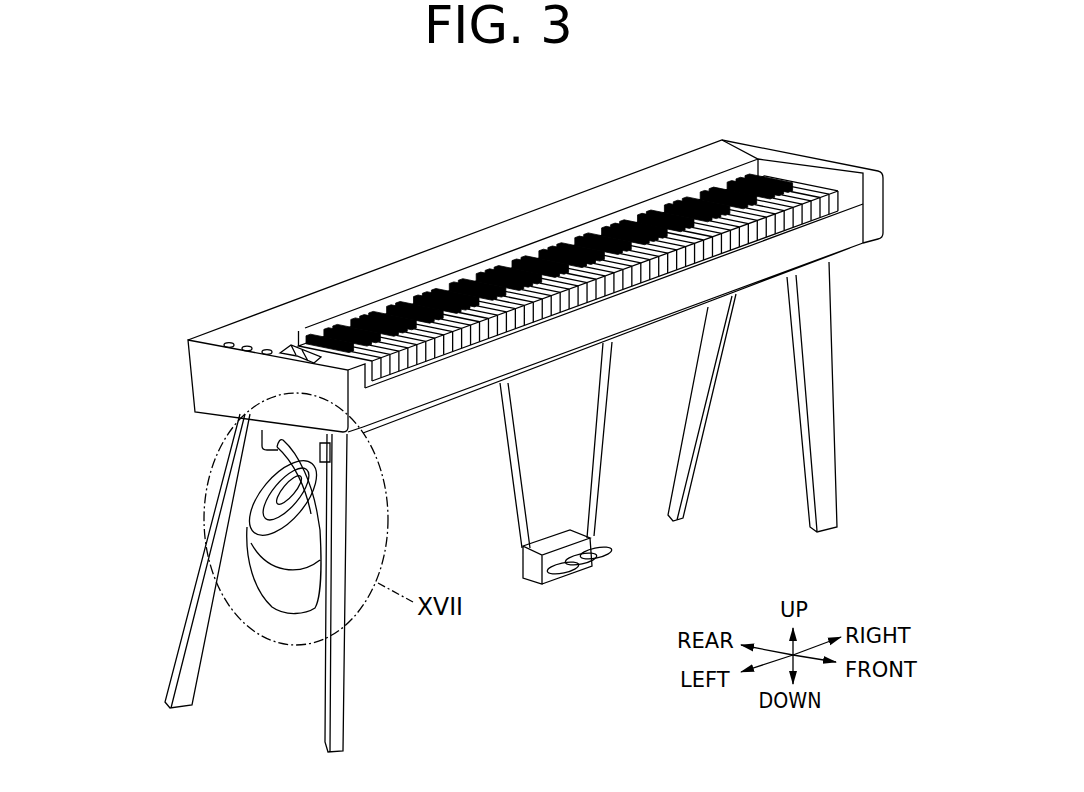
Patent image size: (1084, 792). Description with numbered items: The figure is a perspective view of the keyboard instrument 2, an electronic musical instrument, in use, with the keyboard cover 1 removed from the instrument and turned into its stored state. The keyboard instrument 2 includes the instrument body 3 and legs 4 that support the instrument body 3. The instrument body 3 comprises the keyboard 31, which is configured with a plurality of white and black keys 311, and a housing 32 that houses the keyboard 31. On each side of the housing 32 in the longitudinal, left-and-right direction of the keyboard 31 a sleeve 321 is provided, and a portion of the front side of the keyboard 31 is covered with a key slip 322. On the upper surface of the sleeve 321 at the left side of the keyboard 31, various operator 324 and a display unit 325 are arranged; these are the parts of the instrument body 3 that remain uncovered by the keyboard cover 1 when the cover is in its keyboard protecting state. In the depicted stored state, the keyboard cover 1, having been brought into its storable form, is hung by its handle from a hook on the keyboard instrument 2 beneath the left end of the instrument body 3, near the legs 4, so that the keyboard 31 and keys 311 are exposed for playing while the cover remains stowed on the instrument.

The keyboard cover 1 is at (285, 619).
The keyboard instrument 2 is at (103, 283).
The instrument body 3 is at (186, 365).
The legs 4 is at (197, 573).
The keyboard 31 is at (595, 222).
The keys 311 is at (702, 192).
The housing 32 is at (780, 142).
The sleeve 321 is at (358, 400).
The key slip 322 is at (808, 246).
The operator 324 is at (298, 347).
The display unit 325 is at (267, 350).